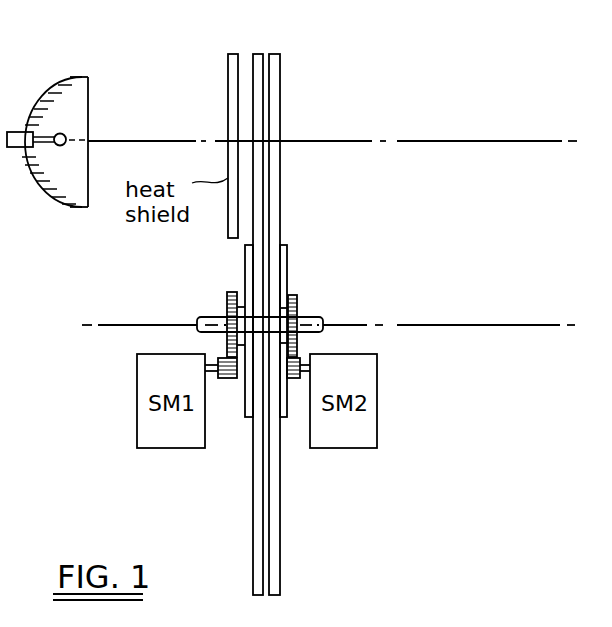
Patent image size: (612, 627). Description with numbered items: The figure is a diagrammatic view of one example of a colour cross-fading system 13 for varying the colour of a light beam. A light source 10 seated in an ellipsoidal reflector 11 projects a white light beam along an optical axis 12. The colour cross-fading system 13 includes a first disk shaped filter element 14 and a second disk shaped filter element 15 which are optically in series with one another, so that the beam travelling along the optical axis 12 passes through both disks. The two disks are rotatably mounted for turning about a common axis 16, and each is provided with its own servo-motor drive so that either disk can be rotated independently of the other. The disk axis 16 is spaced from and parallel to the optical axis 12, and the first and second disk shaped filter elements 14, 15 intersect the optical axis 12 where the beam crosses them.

The light source 10 is at (68, 134).
The ellipsoidal reflector 11 is at (82, 86).
The optical axis 12 is at (337, 140).
The colour cross-fading system 13 is at (232, 468).
The first disk shaped filter element 14 is at (253, 68).
The second disk shaped filter element 15 is at (280, 70).
The common axis 16 is at (405, 327).